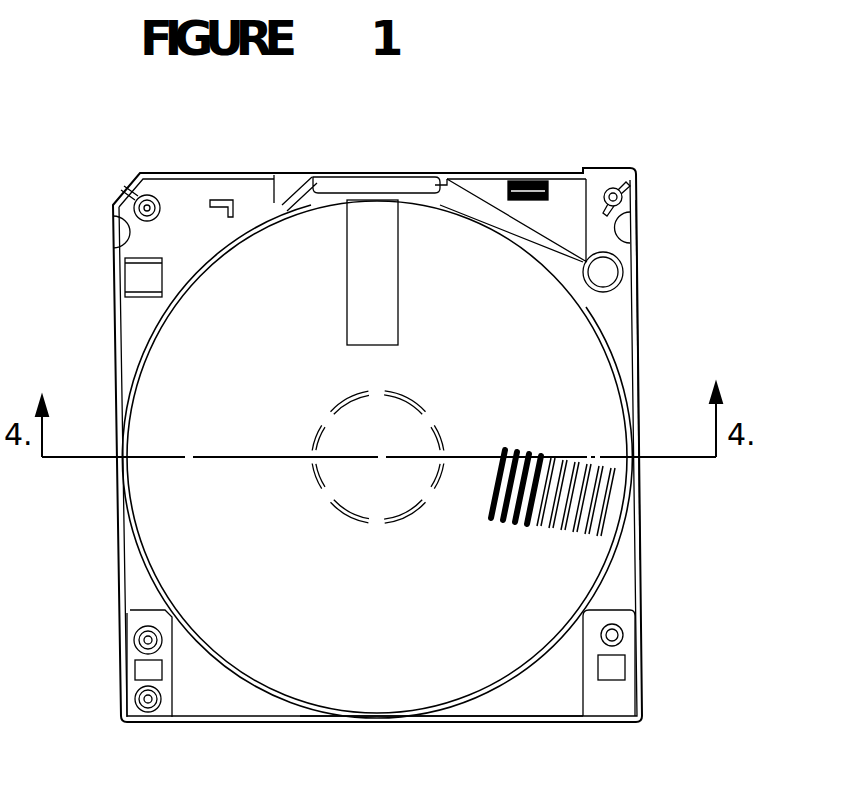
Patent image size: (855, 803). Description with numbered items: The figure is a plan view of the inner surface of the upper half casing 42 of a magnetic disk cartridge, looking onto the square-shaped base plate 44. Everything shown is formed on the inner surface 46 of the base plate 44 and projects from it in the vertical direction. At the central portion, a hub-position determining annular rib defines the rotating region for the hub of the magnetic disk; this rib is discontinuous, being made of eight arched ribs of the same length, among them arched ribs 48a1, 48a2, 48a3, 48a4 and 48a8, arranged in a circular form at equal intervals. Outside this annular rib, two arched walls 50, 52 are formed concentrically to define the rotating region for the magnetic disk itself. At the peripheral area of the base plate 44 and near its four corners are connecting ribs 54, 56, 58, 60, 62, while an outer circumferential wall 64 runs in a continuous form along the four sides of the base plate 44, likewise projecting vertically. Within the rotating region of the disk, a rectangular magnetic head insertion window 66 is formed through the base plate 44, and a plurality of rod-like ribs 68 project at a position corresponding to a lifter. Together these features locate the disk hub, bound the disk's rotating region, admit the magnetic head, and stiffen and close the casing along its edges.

The upper half casing 42 is at (410, 782).
The base plate 44 is at (643, 568).
The inner surface 46 is at (533, 692).
The arched rib 48a1 is at (313, 446).
The arched rib 48a2 is at (340, 400).
The arched rib 48a3 is at (405, 396).
The arched rib 48a4 is at (437, 442).
The arched rib 48a8 is at (318, 485).
The arched wall 50 is at (188, 290).
The arched wall 52 is at (203, 642).
The connecting rib 54 is at (133, 197).
The connecting rib 56 is at (210, 198).
The connecting rib 58 is at (632, 197).
The connecting rib 60 is at (618, 638).
The connecting rib 62 is at (135, 702).
The outer circumferential wall 64 is at (637, 318).
The magnetic head insertion window 66 is at (383, 277).
The rod-like ribs 68 is at (523, 527).